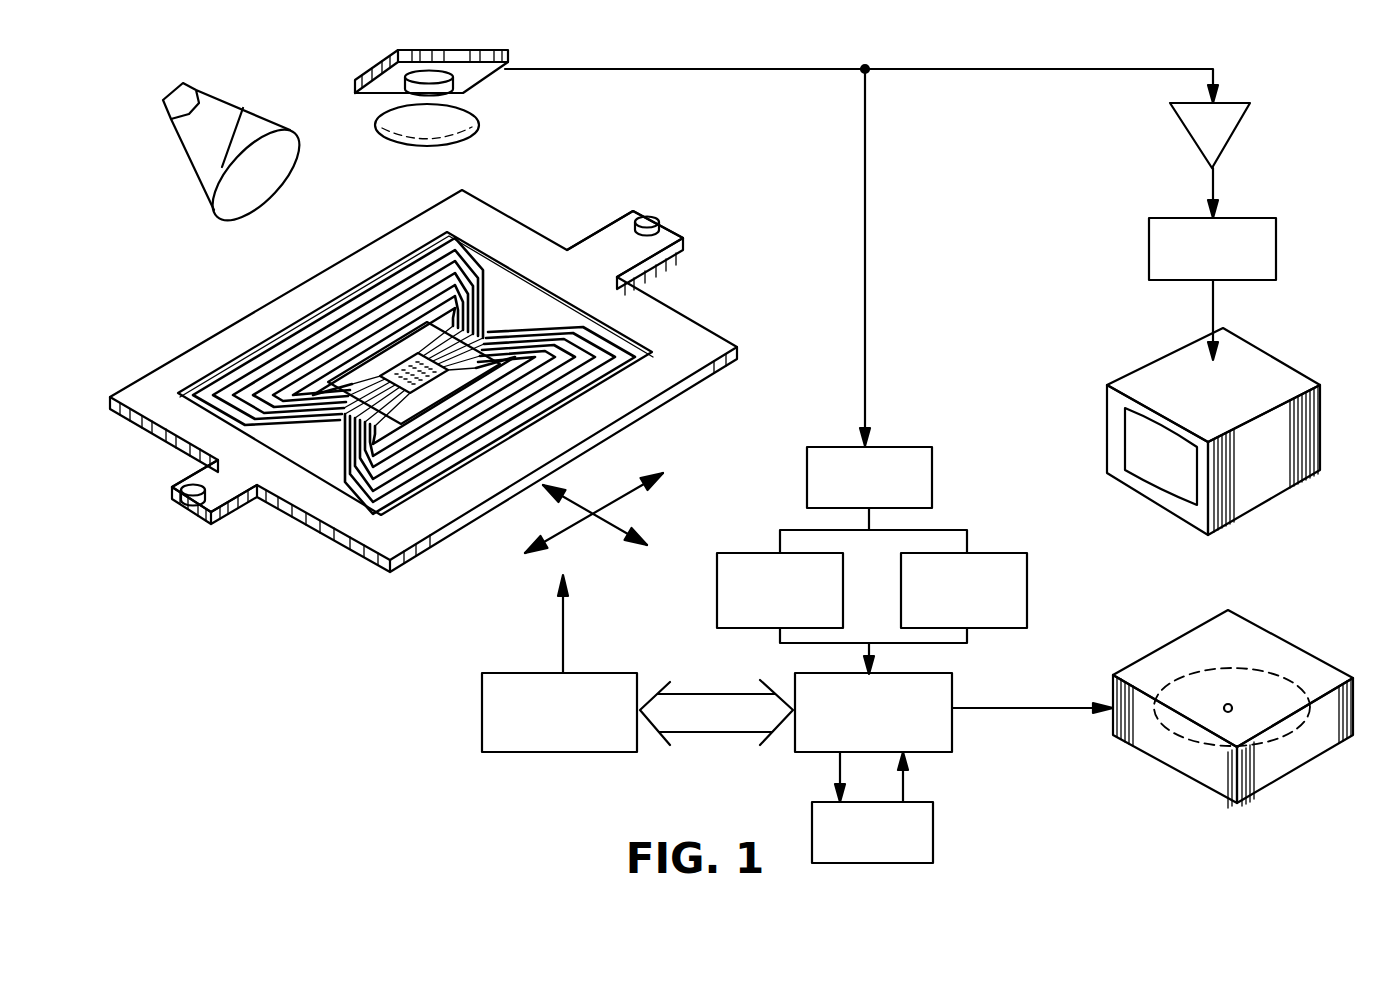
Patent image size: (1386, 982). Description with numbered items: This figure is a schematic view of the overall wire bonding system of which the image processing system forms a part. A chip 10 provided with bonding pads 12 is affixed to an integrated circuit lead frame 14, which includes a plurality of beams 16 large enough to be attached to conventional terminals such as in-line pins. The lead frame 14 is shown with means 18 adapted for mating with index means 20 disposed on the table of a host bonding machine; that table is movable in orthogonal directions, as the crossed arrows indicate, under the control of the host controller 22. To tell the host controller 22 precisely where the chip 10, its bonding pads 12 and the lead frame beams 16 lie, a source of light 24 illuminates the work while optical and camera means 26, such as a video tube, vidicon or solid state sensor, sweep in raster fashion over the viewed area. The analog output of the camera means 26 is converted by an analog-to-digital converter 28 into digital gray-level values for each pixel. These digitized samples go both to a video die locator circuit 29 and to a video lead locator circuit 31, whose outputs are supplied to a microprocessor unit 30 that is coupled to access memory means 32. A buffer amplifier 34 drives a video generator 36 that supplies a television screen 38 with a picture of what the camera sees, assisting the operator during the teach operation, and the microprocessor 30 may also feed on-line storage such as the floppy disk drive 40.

The chip 10 is at (423, 328).
The bonding pads 12 is at (452, 352).
The integrated circuit lead frame 14 is at (670, 327).
The beams 16 is at (588, 380).
The means adapted for mating with index means 18 is at (683, 232).
The index means 20 is at (648, 227).
The host controller 22 is at (594, 678).
The source of light 24 is at (240, 118).
The optical and camera means 26 is at (480, 58).
The analog-to-digital converter 28 is at (922, 472).
The video die locator circuit 29 is at (1010, 558).
The microprocessor unit 30 is at (940, 742).
The video lead locator circuit 31 is at (760, 556).
The access memory means 32 is at (933, 822).
The buffer amplifier 34 is at (1227, 137).
The video generator 36 is at (1272, 256).
The television screen 38 is at (1280, 383).
The floppy disk drive 40 is at (1277, 652).